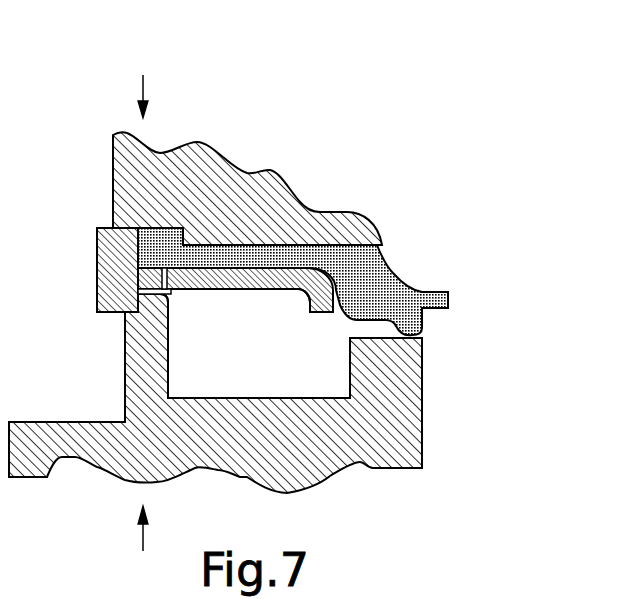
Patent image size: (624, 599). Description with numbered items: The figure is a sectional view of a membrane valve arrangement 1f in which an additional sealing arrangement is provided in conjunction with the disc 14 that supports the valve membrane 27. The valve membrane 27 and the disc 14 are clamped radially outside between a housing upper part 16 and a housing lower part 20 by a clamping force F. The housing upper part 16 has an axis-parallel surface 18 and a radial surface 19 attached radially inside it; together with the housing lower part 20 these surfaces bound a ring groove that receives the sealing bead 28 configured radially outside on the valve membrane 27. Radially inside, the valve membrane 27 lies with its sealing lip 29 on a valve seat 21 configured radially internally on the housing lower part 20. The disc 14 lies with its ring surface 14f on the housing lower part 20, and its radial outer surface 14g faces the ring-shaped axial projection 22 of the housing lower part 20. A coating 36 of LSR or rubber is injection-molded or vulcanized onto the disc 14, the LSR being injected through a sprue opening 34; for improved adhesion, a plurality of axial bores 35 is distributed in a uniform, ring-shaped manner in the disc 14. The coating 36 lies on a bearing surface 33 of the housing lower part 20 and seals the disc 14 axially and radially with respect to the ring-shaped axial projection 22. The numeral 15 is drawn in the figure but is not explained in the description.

The membrane valve arrangement 1f is at (436, 86).
The disc 14 is at (282, 276).
The ring surface 14f is at (150, 294).
The radial outer surface 14g is at (138, 256).
The lip of sleeve 15 is at (342, 306).
The housing upper part 16 is at (279, 172).
The axis-parallel surface 18 is at (175, 228).
The radial surface 19 is at (108, 228).
The housing lower part 20 is at (123, 381).
The valve seat 21 is at (400, 344).
The ring-shaped axial projection 22 is at (115, 267).
The valve membrane 27 is at (400, 277).
The sealing bead 28 is at (163, 228).
The sealing lip 29 is at (420, 322).
The bearing surface 33 is at (165, 296).
The sprue opening 34 is at (123, 333).
The axial bores 35 is at (226, 290).
The coating 36 is at (172, 295).